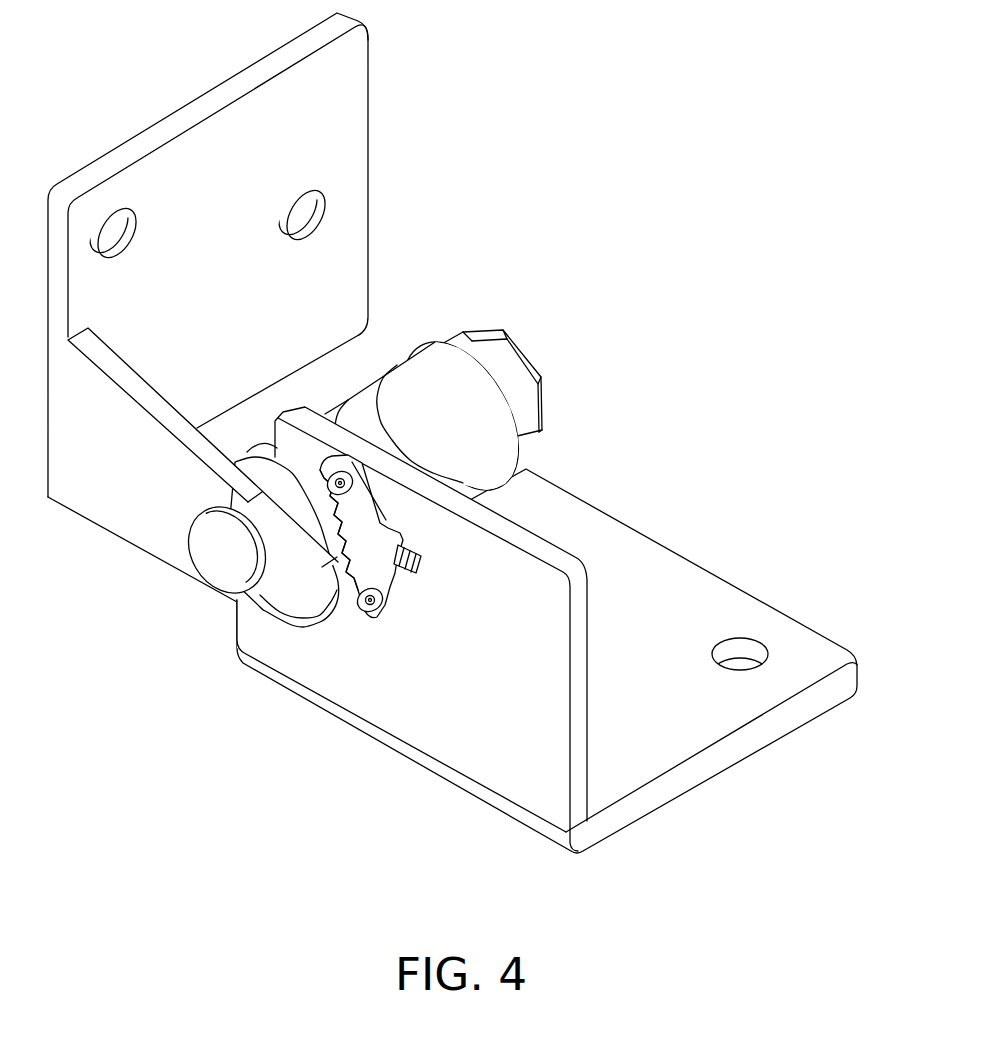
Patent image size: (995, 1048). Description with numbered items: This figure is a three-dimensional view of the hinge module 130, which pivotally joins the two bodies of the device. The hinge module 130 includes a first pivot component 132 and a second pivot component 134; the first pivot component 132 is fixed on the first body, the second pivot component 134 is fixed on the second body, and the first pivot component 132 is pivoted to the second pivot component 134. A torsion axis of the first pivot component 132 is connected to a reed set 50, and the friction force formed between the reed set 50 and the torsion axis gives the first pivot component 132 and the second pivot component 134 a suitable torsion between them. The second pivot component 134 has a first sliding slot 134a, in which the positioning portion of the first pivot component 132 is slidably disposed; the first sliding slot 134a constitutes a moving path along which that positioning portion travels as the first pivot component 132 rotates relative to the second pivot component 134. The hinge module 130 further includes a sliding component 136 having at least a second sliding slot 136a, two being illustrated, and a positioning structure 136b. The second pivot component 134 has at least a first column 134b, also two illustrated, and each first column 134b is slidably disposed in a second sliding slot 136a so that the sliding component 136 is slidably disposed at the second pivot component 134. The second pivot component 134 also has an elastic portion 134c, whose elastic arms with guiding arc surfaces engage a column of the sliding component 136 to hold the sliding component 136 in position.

The hinge module 130 is at (452, 437).
The first pivot component 132 is at (349, 149).
The second pivot component 134 is at (462, 564).
The first sliding slot 134a is at (293, 627).
The first column 134b is at (360, 606).
The elastic portion 134c is at (425, 585).
The sliding component 136 is at (409, 628).
The second sliding slot 136a is at (401, 592).
The positioning structure 136b is at (333, 523).
The reed set 50 is at (438, 362).